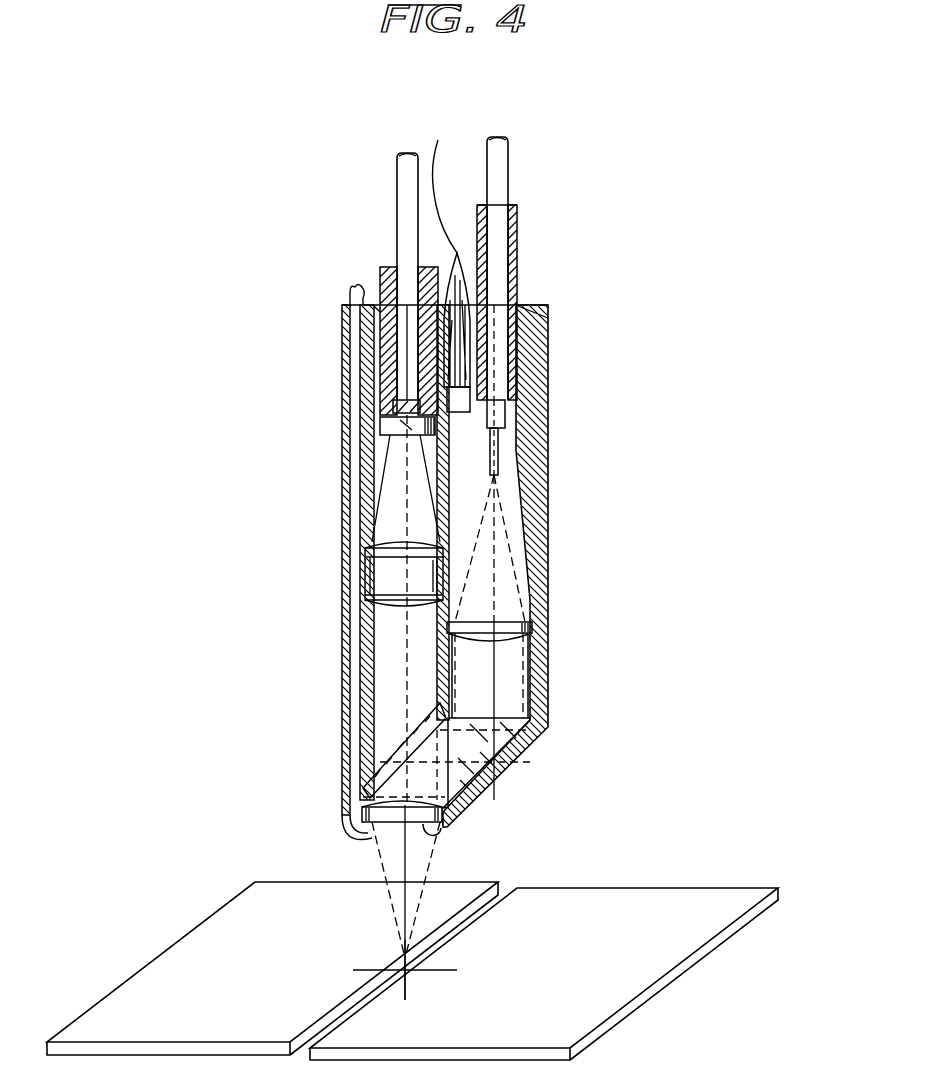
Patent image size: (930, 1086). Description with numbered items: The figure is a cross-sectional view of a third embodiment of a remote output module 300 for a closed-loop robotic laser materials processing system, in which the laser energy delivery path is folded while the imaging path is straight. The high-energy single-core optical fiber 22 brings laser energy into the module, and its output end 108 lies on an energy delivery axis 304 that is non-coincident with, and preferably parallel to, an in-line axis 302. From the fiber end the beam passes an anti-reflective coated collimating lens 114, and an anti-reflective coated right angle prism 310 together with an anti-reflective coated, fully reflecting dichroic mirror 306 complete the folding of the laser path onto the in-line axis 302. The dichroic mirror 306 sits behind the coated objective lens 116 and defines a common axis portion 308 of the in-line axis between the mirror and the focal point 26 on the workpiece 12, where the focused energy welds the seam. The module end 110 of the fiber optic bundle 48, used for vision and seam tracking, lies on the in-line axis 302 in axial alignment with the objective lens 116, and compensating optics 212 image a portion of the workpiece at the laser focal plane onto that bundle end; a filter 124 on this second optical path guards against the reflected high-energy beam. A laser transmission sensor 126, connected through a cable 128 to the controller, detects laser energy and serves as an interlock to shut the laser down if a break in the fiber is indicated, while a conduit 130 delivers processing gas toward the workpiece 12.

The workpiece 12 is at (605, 900).
The single-core optical fiber 22 is at (505, 172).
The laser processing focal point 26 is at (380, 972).
The fiber optic bundle 48 is at (397, 195).
The output end of the high-energy optical fiber 108 is at (497, 472).
The module end of the fiber optic bundle 110 is at (386, 412).
The collimating lens 114 is at (520, 622).
The objective lens 116 is at (432, 824).
The filter 124 is at (381, 445).
The laser transmission sensor 126 is at (460, 402).
The cable 128 is at (445, 252).
The conduit 130 is at (342, 313).
The optics 212 is at (378, 583).
The remote module 300 is at (634, 244).
The in-line axis 302 is at (405, 513).
The energy delivery axis 304 is at (496, 557).
The dichroic mirror 306 is at (393, 760).
The common axis portion 308 is at (407, 878).
The right angle prism 310 is at (530, 750).